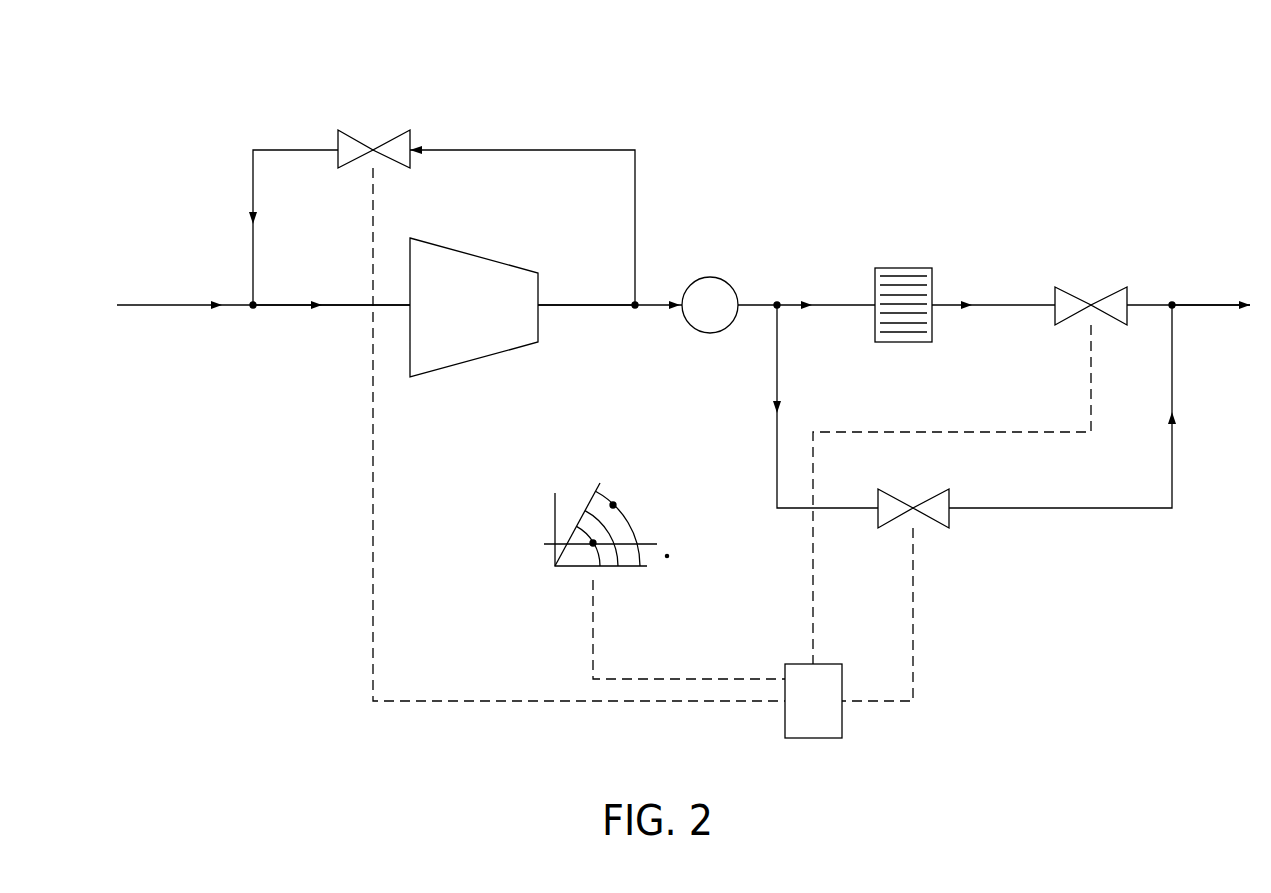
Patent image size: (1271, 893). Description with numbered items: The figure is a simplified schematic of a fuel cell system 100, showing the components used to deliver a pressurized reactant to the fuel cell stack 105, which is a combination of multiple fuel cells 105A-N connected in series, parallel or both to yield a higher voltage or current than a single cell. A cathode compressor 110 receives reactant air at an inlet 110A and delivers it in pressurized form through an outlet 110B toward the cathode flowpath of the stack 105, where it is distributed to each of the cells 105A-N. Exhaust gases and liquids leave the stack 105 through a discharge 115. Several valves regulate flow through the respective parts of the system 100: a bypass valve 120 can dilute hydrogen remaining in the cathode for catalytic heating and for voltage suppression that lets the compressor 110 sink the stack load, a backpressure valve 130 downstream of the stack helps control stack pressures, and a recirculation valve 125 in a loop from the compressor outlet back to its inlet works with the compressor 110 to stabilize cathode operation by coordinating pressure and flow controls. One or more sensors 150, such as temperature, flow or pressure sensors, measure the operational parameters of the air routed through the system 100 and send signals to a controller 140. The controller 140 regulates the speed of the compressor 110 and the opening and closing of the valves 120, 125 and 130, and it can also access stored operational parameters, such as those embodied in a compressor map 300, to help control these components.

The fuel cell system 100 is at (180, 135).
The fuel cell stack 105 is at (900, 268).
The fuel cells 105A-N is at (908, 334).
The cathode compressor 110 is at (483, 258).
The inlet 110A is at (318, 303).
The outlet 110B is at (570, 303).
The discharge 115 is at (1193, 304).
The bypass valve 120 is at (950, 522).
The recirculation valve 125 is at (362, 136).
The backpressure valve 130 is at (1100, 297).
The controller 140 is at (846, 723).
The sensors 150 is at (710, 277).
The compressor map 300 is at (522, 548).